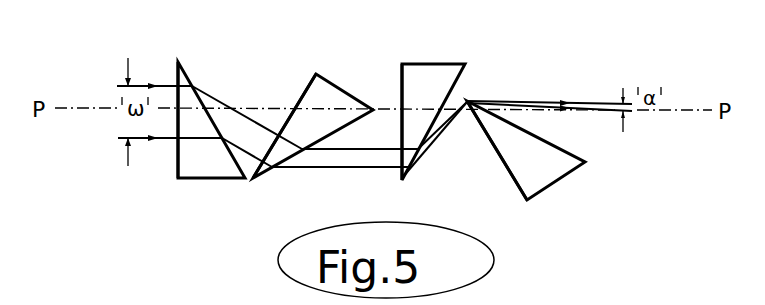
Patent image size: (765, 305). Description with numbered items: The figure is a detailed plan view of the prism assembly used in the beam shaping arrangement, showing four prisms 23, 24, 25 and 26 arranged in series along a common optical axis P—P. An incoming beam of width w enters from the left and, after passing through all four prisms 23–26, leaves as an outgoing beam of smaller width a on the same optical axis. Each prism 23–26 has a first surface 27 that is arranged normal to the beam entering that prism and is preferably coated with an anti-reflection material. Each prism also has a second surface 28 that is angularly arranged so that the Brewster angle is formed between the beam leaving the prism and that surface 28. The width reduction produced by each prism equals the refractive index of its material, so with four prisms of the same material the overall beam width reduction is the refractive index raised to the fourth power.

The prism 23 is at (210, 163).
The prism 24 is at (333, 97).
The prism 25 is at (428, 76).
The prism 26 is at (538, 170).
The first surface 27 is at (177, 158).
The second surface 28 is at (198, 94).